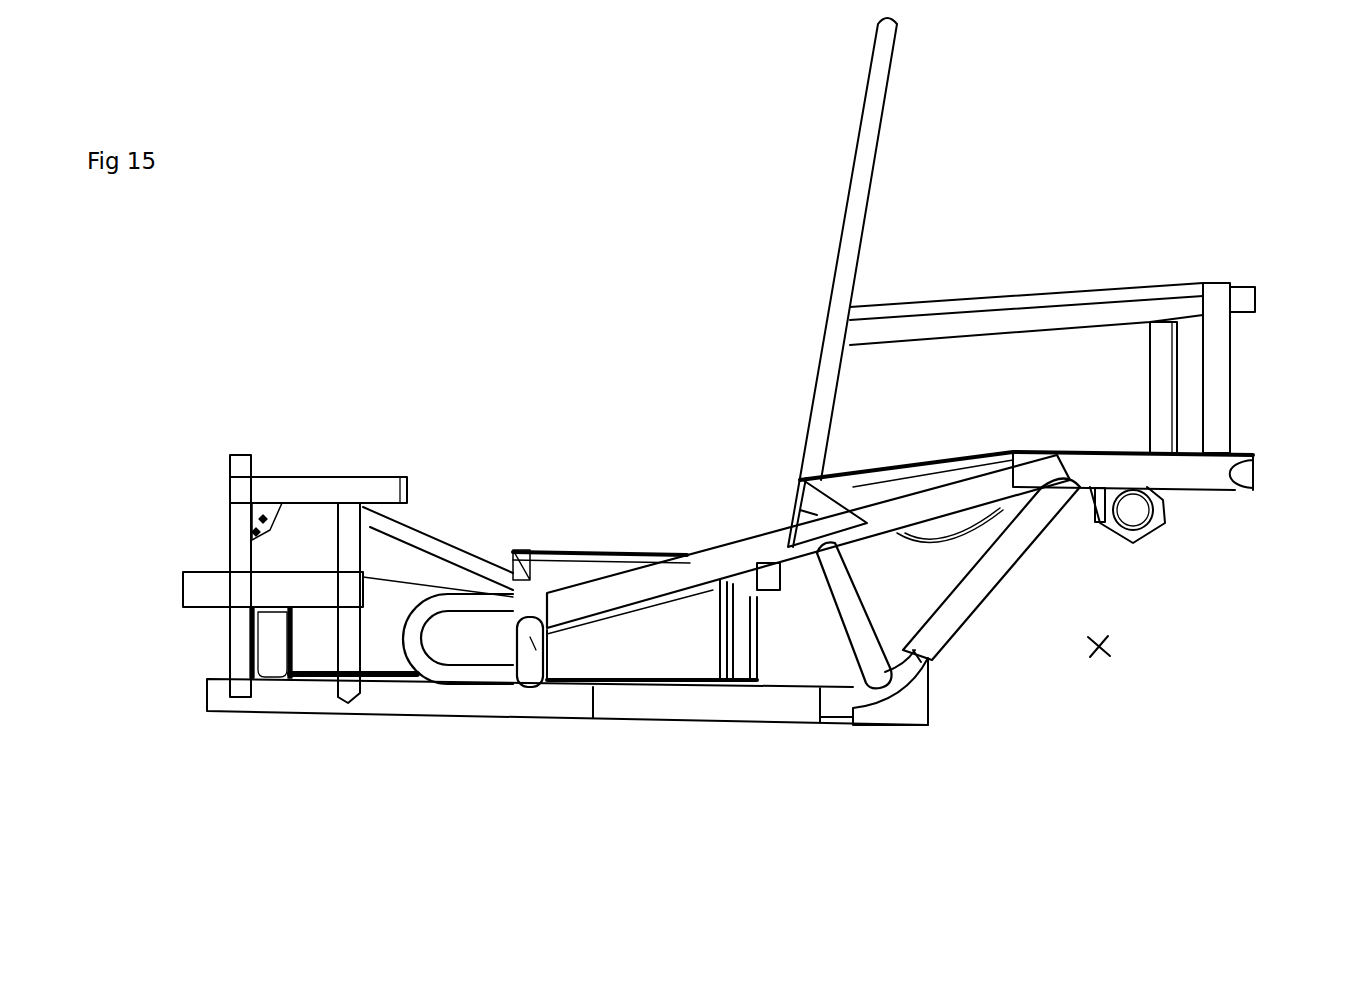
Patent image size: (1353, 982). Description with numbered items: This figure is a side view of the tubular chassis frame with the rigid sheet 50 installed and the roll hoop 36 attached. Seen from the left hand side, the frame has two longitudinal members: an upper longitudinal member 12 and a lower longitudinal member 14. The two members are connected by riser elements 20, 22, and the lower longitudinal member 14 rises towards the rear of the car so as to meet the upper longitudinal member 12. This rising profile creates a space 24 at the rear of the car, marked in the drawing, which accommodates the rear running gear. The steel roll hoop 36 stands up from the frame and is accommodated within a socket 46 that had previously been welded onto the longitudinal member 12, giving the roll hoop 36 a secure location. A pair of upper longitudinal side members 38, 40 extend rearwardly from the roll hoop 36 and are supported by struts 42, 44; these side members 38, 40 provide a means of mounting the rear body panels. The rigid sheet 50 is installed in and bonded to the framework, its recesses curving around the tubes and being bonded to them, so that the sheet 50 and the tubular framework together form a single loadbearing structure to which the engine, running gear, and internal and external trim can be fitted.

The upper longitudinal member 12 is at (687, 582).
The lower longitudinal member 14 is at (663, 702).
The riser element 20 is at (551, 690).
The riser element 22 is at (863, 623).
The space 24 is at (1097, 655).
The roll hoop 36 is at (863, 175).
The upper longitudinal member 38 is at (998, 332).
The upper longitudinal member 40 is at (1053, 297).
The strut 42 is at (1227, 390).
The strut 44 is at (1167, 367).
The socket 46 is at (817, 517).
The rigid sheet 50 is at (908, 592).